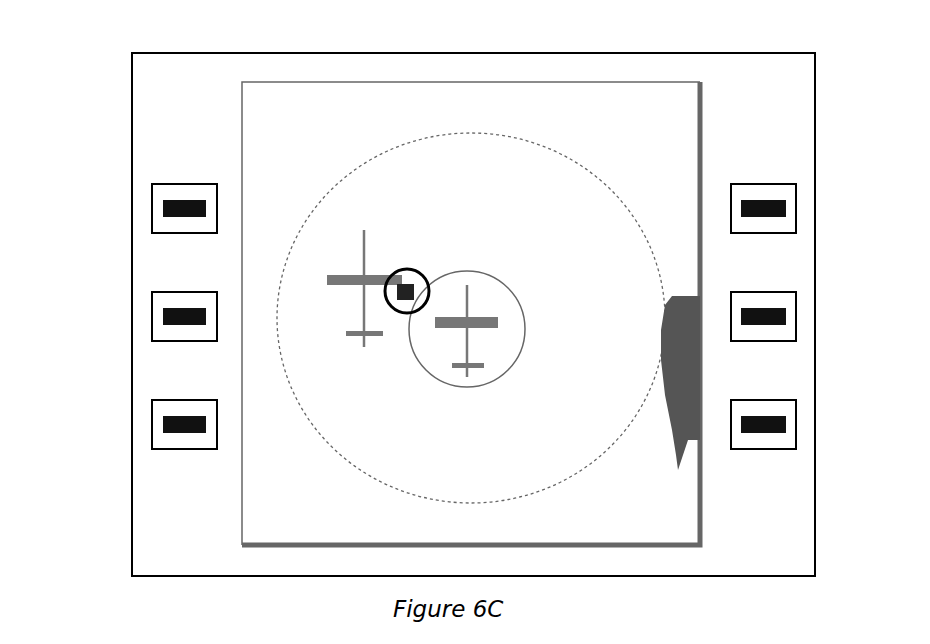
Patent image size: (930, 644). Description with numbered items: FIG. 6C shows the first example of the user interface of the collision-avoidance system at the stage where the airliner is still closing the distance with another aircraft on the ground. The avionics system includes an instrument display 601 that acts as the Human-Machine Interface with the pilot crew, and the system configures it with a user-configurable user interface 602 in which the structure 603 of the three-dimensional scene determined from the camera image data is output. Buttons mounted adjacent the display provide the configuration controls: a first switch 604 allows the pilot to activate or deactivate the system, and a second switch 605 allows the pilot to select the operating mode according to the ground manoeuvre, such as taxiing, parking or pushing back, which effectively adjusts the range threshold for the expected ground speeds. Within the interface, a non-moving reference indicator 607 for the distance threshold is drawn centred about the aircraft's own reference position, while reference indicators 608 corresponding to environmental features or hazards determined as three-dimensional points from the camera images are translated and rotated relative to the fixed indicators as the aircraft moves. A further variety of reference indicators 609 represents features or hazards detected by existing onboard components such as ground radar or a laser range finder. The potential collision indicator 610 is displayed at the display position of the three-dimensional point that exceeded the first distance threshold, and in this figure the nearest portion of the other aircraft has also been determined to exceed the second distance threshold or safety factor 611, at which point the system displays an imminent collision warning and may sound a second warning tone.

The instrument display 601 is at (135, 97).
The user-configurable user interface 602 is at (690, 109).
The structure of the 3D scene 603 is at (460, 350).
The first switch 604 is at (152, 223).
The second switch 605 is at (152, 333).
The non-moving reference indicator for the distance threshold 607 is at (613, 192).
The reference indicators for environmental features and/or hazards 608 is at (337, 278).
The further reference indicators 609 is at (687, 385).
The potential collision indicator 610 is at (430, 282).
The second distance threshold or safety factor 611 is at (403, 270).